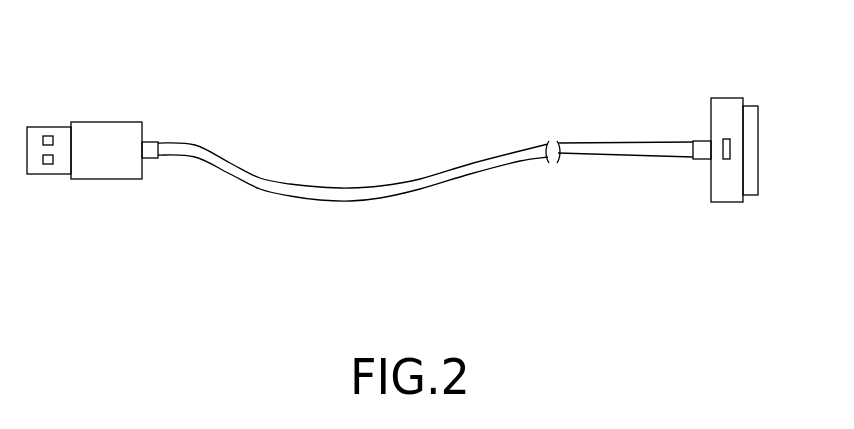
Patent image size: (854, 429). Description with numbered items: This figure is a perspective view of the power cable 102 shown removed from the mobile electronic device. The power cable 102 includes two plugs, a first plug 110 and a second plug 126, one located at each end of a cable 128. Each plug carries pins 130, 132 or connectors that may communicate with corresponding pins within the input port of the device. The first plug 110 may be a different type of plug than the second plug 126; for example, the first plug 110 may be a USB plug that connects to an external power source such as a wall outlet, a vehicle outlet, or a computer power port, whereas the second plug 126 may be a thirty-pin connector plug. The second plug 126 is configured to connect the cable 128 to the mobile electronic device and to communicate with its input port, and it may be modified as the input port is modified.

The power cable 102 is at (353, 66).
The first plug 110 is at (107, 127).
The pins 130 is at (58, 172).
The cable 128 is at (423, 188).
The second plug 126 is at (728, 102).
The pins 132 is at (757, 120).